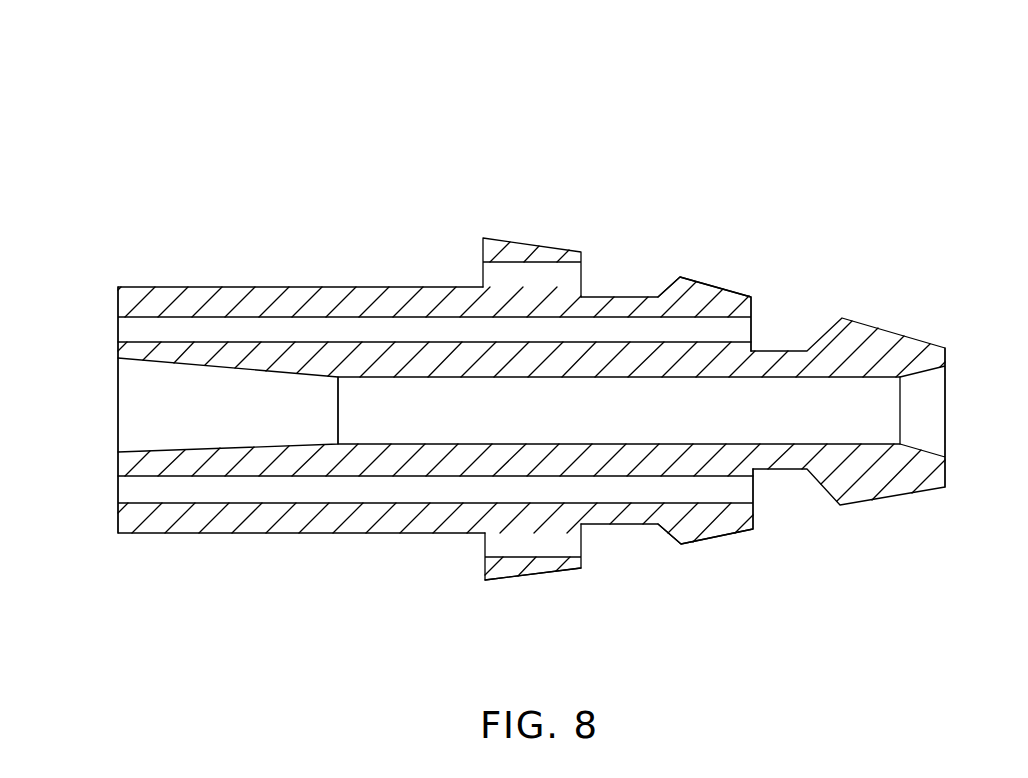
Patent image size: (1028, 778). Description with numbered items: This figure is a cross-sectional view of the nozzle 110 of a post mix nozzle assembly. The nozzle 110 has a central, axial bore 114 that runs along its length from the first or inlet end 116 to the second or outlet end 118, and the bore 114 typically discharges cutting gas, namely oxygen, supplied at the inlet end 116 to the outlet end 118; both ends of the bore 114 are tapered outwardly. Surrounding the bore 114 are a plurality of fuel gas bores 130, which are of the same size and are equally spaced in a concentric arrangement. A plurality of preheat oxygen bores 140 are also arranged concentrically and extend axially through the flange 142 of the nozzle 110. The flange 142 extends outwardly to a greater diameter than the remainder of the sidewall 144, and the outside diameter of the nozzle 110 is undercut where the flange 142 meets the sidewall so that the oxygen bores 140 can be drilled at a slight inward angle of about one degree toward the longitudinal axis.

The nozzle 110 is at (702, 232).
The central axial bore 114 is at (715, 380).
The first or inlet end 116 is at (946, 358).
The second or outlet end 118 is at (117, 520).
The fuel gas bores 130 is at (746, 336).
The preheat oxygen bores 140 is at (543, 250).
The flange 142 is at (512, 576).
The sidewall 144 is at (400, 531).